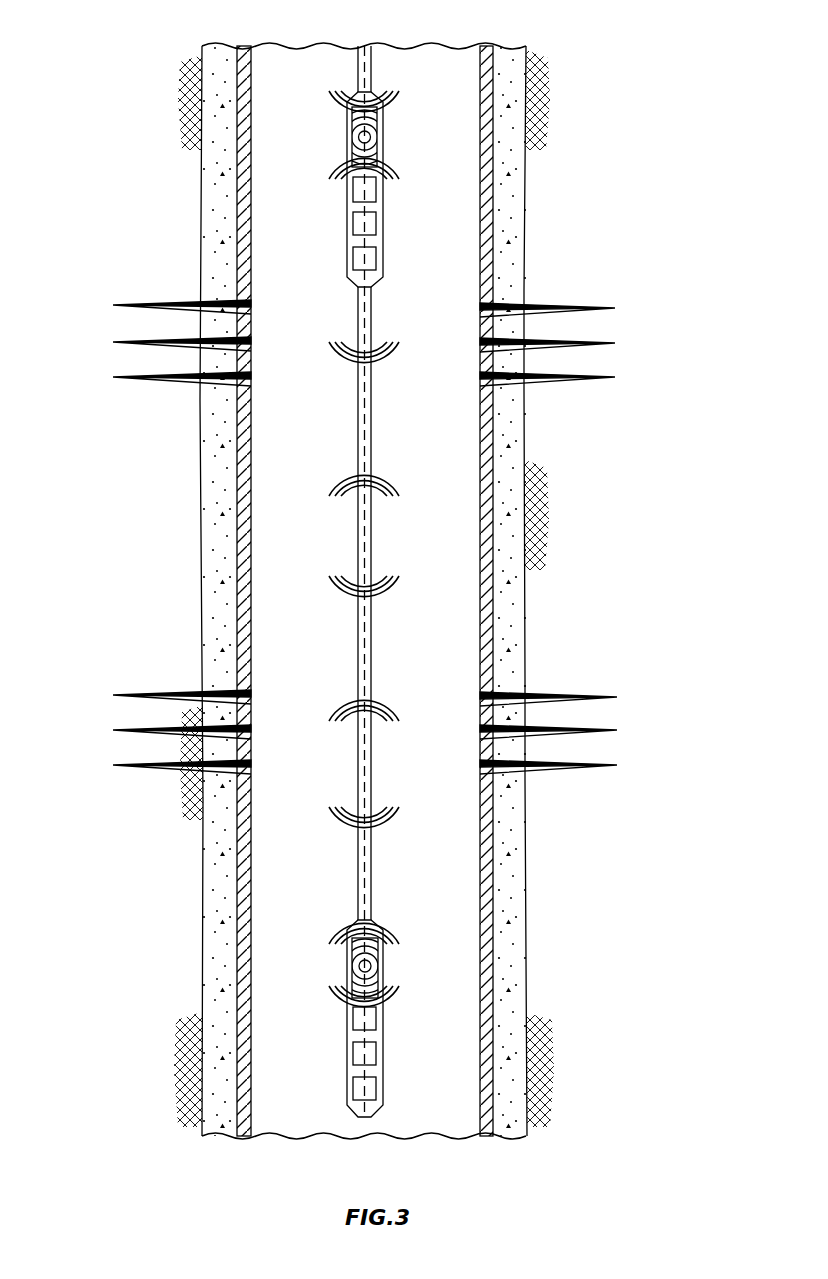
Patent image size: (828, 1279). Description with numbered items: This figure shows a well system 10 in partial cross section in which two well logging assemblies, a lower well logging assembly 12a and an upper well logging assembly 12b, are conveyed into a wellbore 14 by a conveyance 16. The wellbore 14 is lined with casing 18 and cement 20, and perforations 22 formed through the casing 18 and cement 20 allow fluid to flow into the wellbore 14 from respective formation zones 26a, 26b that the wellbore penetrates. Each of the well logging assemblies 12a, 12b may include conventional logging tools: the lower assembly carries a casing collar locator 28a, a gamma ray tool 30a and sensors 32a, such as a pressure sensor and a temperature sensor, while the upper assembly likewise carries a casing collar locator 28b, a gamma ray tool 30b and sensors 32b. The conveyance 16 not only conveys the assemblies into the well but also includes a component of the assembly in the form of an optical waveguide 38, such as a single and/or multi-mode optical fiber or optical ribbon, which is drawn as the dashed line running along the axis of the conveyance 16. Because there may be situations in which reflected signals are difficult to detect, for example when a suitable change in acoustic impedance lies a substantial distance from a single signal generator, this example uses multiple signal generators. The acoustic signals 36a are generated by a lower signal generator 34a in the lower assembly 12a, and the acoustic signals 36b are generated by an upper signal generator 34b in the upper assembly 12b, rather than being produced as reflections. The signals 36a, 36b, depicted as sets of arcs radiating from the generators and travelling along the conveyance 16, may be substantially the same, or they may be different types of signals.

The well system 10 is at (125, 74).
The well logging assembly 12a is at (383, 1050).
The well logging assembly 12b is at (383, 220).
The wellbore 14 is at (484, 812).
The conveyance 16 is at (357, 408).
The casing 18 is at (237, 891).
The cement 20 is at (200, 928).
The perforations 22 is at (542, 300).
The formation zone 26a is at (724, 706).
The formation zone 26b is at (725, 360).
The casing collar locator 28a is at (352, 1085).
The casing collar locator 28b is at (352, 258).
The gamma ray tool 30a is at (352, 1047).
The gamma ray tool 30b is at (352, 222).
The sensors 32a is at (352, 1015).
The sensors 32b is at (374, 192).
The lower signal generator 34a is at (351, 966).
The upper signal generator 34b is at (375, 137).
The acoustic signals 36a is at (385, 476).
The acoustic signals 36b is at (343, 103).
The optical waveguide 38 is at (367, 532).